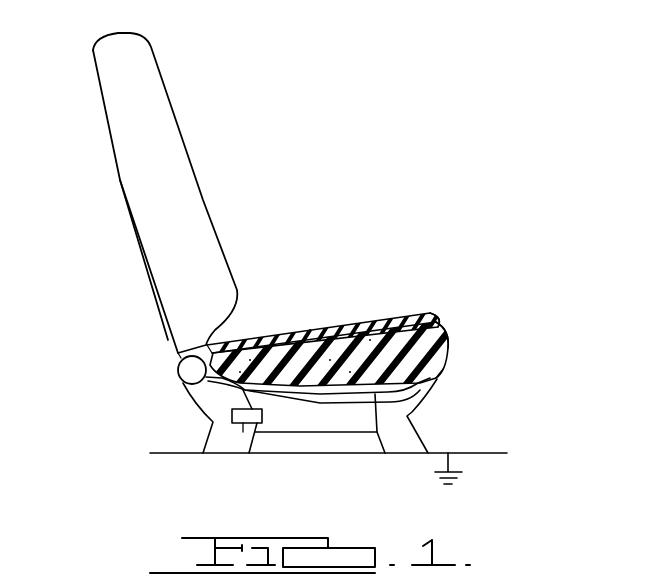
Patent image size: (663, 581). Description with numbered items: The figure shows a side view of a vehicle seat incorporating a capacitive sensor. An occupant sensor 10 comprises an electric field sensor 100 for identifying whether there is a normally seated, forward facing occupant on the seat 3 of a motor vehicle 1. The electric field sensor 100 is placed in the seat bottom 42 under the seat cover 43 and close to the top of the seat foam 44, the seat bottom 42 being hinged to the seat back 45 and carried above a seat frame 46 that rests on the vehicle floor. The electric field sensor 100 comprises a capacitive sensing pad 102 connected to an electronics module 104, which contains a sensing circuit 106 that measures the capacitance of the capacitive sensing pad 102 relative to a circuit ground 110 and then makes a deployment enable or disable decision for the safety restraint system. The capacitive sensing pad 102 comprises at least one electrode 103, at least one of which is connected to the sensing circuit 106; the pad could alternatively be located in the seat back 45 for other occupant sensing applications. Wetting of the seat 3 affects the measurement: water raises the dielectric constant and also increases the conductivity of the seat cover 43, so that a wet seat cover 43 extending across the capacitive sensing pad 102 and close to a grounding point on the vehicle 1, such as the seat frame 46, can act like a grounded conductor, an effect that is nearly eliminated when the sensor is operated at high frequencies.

The motor vehicle 1 is at (495, 453).
The seat 3 is at (123, 195).
The occupant sensor 10 is at (433, 176).
The seat bottom 42 is at (445, 356).
The seat cover 43 is at (338, 325).
The seat foam 44 is at (438, 340).
The seat back 45 is at (165, 313).
The seat frame 46 is at (412, 421).
The electric field sensor 100 is at (412, 315).
The capacitive sensing pad 102 is at (295, 325).
The electrode 103 is at (327, 291).
The electronics module 104 is at (232, 417).
The sensing circuit 106 is at (231, 434).
The circuit ground 110 is at (450, 462).